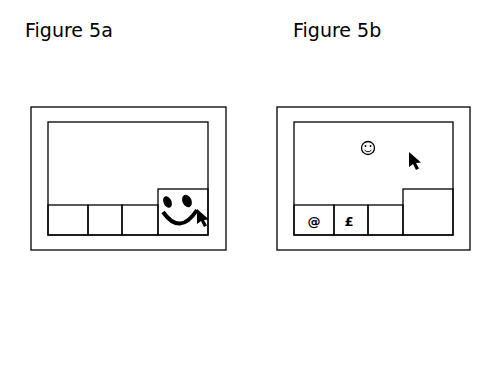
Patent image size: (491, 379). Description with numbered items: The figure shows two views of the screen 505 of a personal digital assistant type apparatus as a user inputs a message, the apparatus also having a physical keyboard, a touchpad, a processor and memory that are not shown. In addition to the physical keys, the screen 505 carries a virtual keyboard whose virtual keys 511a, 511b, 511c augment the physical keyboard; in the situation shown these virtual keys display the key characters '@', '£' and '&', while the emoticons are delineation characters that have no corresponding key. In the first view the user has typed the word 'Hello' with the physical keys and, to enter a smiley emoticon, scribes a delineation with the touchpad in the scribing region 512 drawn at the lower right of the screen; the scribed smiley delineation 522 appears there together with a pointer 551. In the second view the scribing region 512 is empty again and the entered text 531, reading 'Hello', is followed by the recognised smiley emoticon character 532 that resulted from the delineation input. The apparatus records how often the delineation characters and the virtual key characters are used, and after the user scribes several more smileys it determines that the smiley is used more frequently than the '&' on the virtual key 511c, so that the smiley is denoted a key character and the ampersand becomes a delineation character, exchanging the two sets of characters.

In FIG. 5A, the screen 505 is at (144, 80).
In FIG. 5A, the virtual key 511a is at (77, 232).
In FIG. 5A, the virtual key 511b is at (98, 232).
In FIG. 5A, the virtual key 511c is at (133, 232).
In FIG. 5B, the virtual key 511c is at (383, 233).
In FIG. 5A, the candidate character / input area 512 is at (162, 230).
In FIG. 5B, the candidate character / input area 512 is at (415, 230).
In FIG. 5A, the handwritten smiley input 522 is at (192, 225).
In FIG. 5A, the cursor / pointer 551 is at (207, 217).
In FIG. 5B, the text entry (Hello) 531 is at (332, 140).
In FIG. 5B, the inserted smiley character 532 is at (367, 141).